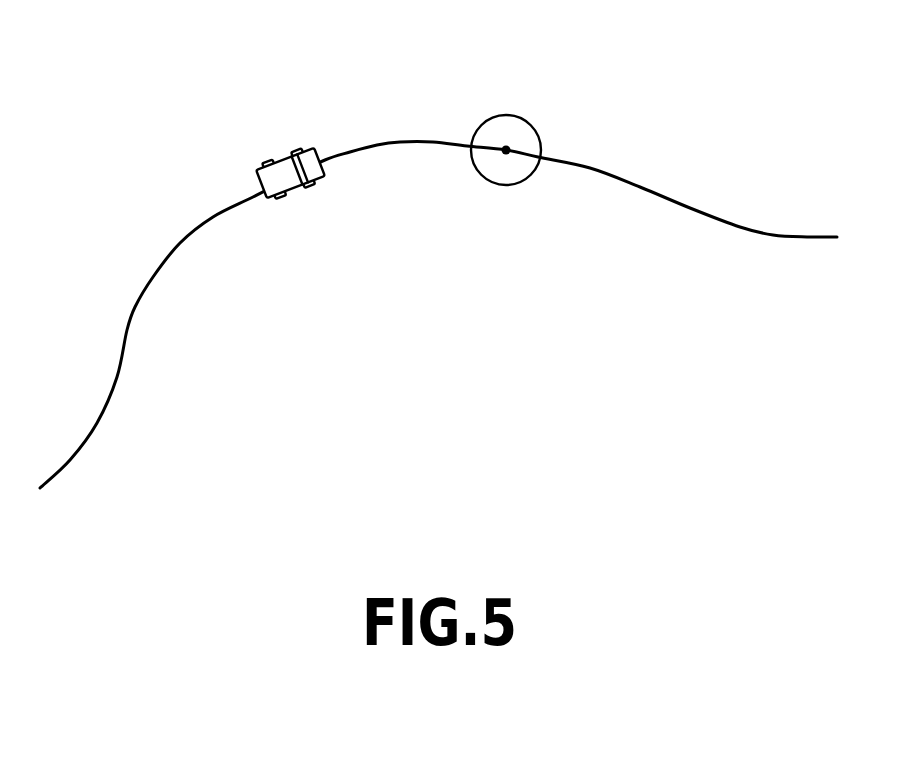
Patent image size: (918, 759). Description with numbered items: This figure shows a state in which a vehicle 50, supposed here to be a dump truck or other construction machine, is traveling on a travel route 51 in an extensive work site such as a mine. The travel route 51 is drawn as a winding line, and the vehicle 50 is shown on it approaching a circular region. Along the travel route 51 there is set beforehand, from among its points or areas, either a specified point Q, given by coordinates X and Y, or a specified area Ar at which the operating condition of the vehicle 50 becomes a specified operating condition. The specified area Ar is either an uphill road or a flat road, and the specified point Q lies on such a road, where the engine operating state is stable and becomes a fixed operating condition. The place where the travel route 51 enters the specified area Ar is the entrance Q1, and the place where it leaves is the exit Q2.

The vehicle 50 is at (278, 160).
The travel route 51 is at (135, 305).
The specified area Ar is at (507, 115).
The specified point Q is at (508, 150).
The entrance to specified area Q1 is at (467, 148).
The exit from specified area Q2 is at (539, 158).